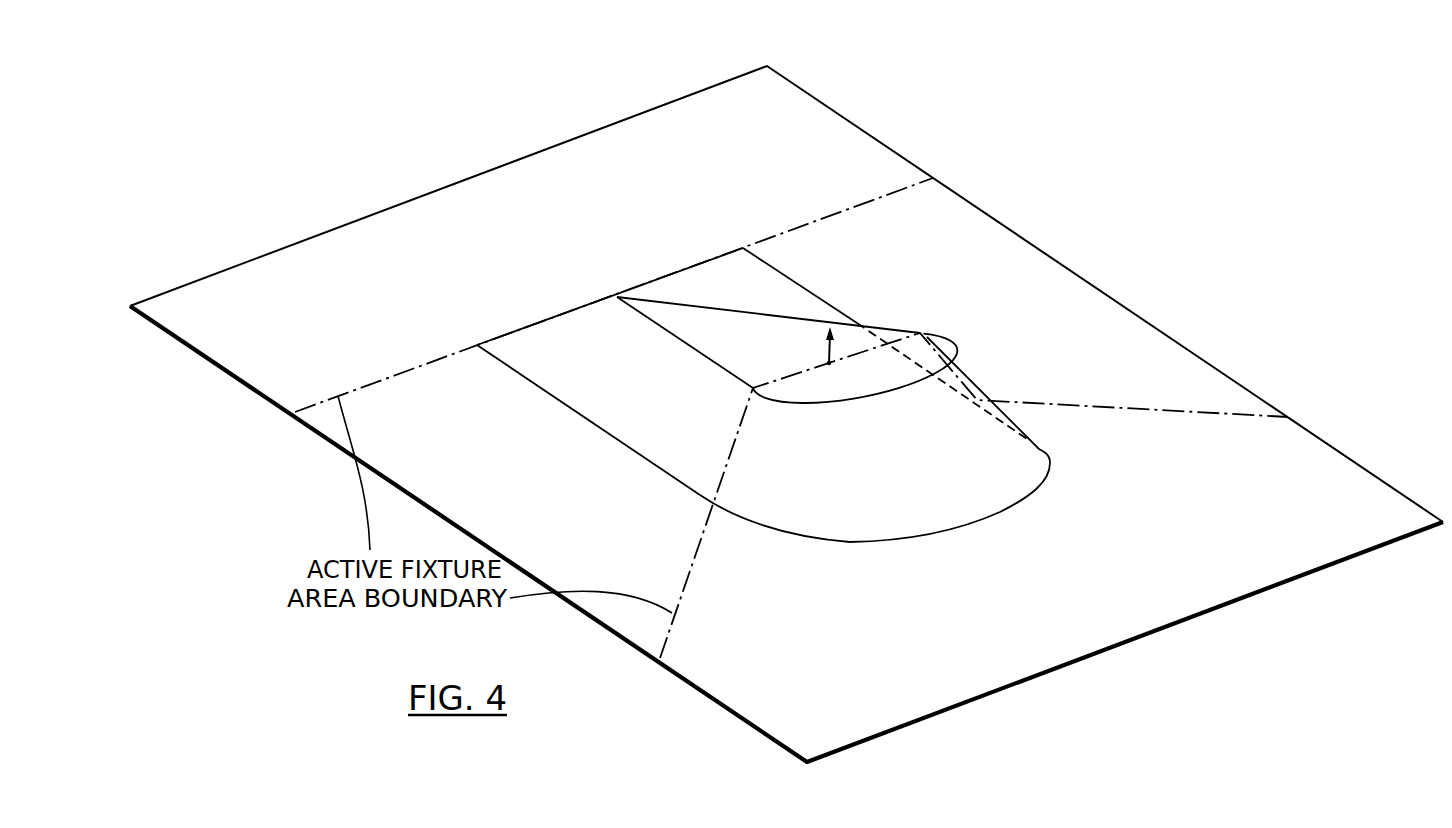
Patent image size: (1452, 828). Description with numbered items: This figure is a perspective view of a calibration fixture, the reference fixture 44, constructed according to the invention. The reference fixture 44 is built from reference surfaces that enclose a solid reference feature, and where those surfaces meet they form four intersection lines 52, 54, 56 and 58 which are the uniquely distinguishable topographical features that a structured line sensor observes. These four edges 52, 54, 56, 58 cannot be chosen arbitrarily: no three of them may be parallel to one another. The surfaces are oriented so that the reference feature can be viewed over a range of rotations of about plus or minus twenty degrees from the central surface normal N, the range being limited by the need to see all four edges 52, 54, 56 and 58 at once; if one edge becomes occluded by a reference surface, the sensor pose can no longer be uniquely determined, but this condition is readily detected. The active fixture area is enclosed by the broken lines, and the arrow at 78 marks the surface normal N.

The reference fixture 44 is at (965, 144).
The intersection line 52 is at (559, 400).
The intersection line 54 is at (697, 352).
The intersection line 56 is at (730, 309).
The intersection line 58 is at (820, 298).
The surface normal vector N 78 is at (827, 356).